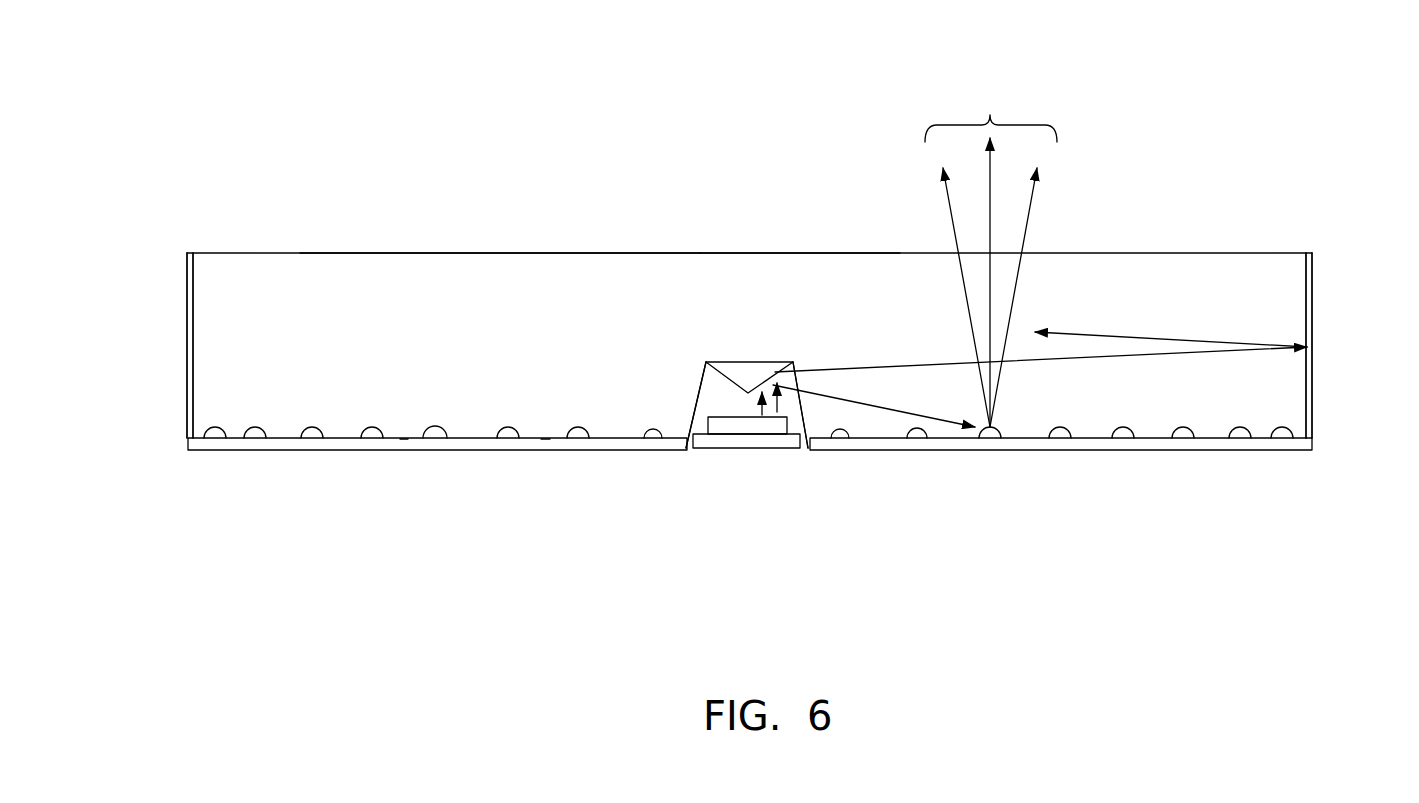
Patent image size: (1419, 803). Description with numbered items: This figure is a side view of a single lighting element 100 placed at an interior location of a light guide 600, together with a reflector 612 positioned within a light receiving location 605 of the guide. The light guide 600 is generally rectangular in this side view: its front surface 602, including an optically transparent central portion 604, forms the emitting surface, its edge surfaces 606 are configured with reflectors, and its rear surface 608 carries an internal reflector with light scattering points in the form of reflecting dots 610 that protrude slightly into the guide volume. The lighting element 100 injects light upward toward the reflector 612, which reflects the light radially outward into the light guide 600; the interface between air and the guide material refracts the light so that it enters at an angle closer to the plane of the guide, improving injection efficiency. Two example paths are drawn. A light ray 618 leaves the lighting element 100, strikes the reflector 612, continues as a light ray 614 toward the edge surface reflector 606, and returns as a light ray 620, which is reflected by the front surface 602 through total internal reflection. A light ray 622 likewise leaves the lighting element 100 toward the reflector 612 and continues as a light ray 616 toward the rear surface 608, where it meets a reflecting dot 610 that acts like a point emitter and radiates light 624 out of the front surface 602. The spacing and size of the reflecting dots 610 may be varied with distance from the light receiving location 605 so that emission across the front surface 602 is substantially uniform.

The lighting element 100 is at (717, 448).
The light guide 600 is at (312, 280).
The front surface 602 is at (507, 253).
The central portion 604 is at (757, 253).
The light receiving location 605 is at (697, 393).
The edge surfaces 606 is at (187, 308).
The rear surface 608 is at (323, 438).
The reflecting dots 610 is at (443, 415).
The reflector 612 is at (737, 370).
The light ray 614 is at (853, 368).
The light ray 616 is at (890, 410).
The light ray 618 is at (800, 430).
The light ray 620 is at (1088, 332).
The light ray 622 is at (777, 433).
The radiated light 624 is at (990, 115).